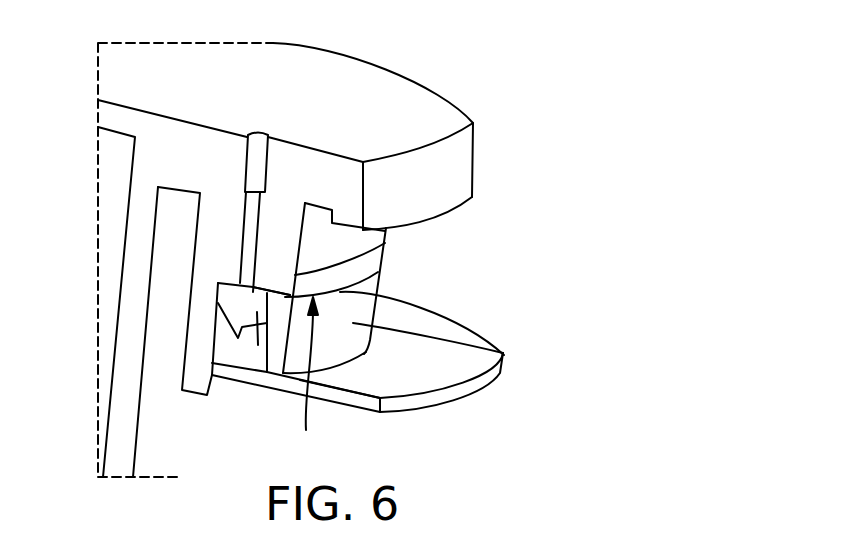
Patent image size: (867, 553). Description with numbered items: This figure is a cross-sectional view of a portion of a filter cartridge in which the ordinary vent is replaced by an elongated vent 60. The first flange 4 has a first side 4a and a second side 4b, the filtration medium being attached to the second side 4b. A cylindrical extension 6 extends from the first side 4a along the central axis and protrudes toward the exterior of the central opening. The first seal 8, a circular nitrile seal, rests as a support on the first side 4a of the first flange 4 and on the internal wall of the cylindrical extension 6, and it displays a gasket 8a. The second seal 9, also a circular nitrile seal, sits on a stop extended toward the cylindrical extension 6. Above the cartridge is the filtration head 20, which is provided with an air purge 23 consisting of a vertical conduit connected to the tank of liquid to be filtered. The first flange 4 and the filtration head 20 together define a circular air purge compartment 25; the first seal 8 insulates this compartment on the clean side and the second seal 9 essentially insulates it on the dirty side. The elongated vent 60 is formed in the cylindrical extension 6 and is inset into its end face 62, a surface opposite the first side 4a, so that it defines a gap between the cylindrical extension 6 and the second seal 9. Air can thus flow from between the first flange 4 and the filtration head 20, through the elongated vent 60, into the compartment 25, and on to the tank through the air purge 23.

The filtration head 20 is at (427, 173).
The air purge 23 is at (265, 171).
The second seal 9 is at (367, 242).
The end face 62 is at (390, 292).
The first side 4a is at (467, 318).
The cylindrical extension 6 is at (503, 355).
The first flange 4 is at (470, 392).
The second side 4b is at (353, 410).
The elongated vent 60 is at (312, 378).
The first seal 8 is at (237, 353).
The air purge compartment 25 is at (258, 345).
The gasket 8a is at (300, 287).